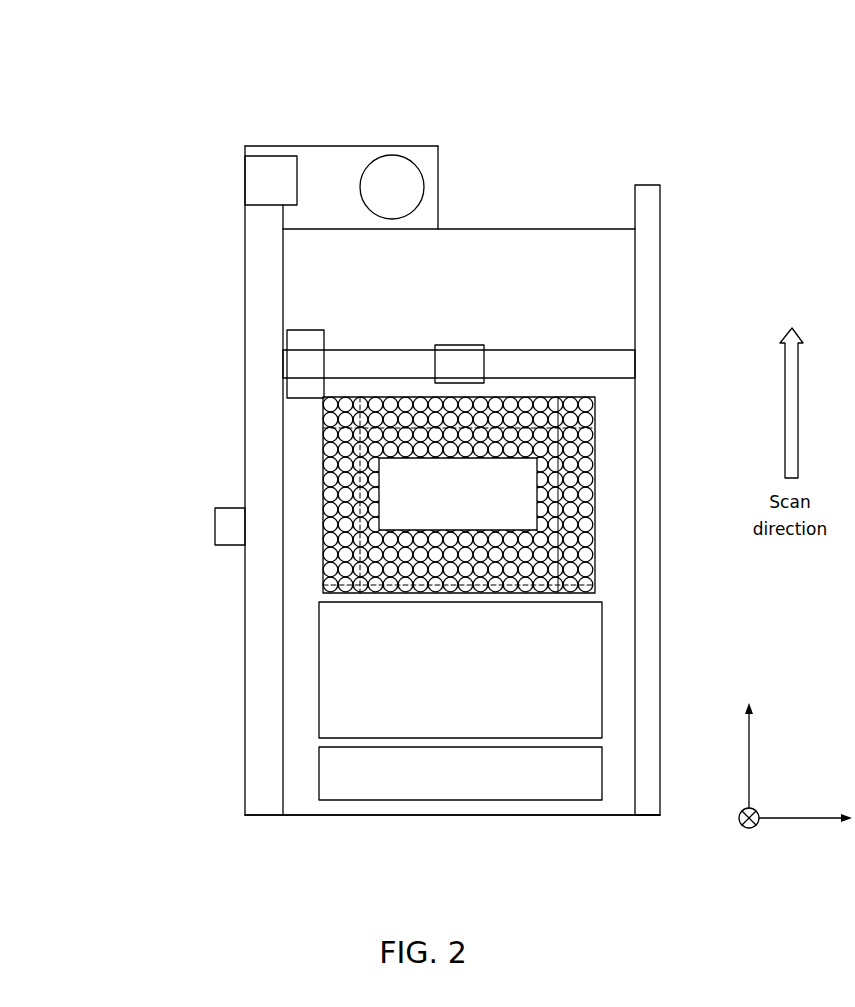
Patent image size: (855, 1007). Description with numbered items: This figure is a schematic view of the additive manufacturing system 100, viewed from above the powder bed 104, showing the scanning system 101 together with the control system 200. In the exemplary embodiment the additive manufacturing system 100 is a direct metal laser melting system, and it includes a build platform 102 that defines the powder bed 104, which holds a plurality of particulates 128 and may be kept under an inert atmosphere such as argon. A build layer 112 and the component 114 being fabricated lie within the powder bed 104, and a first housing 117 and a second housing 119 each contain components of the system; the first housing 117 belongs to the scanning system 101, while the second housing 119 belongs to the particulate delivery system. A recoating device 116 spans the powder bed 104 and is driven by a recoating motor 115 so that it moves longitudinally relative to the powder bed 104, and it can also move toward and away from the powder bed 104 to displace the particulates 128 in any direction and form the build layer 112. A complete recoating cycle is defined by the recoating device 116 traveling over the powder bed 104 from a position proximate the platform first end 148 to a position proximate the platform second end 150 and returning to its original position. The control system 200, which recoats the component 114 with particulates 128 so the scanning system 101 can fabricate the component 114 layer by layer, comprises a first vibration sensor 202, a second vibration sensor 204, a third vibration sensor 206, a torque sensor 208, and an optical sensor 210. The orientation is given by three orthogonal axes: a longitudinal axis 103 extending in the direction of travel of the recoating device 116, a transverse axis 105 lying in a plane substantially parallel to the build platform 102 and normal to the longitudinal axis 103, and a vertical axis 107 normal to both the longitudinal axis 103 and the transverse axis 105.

The additive manufacturing system 100 is at (716, 46).
The scanning system 101 is at (136, 459).
The build platform 102 is at (605, 817).
The longitudinal axis 103 is at (750, 752).
The powder bed 104 is at (596, 425).
The transverse axis 105 is at (800, 820).
The vertical axis 107 is at (748, 829).
The build layer 112 is at (452, 500).
The component 114 is at (598, 441).
The recoating motor 115 is at (410, 178).
The recoating device 116 is at (597, 362).
The first housing 117 is at (570, 675).
The second housing 119 is at (580, 770).
The particulates 128 is at (330, 583).
The platform first end 148 is at (326, 838).
The platform second end 150 is at (549, 152).
The control system 200 is at (126, 374).
The first vibration sensor 202 is at (460, 360).
The second vibration sensor 204 is at (298, 343).
The third vibration sensor 206 is at (215, 522).
The torque sensor 208 is at (368, 144).
The optical sensor 210 is at (522, 495).